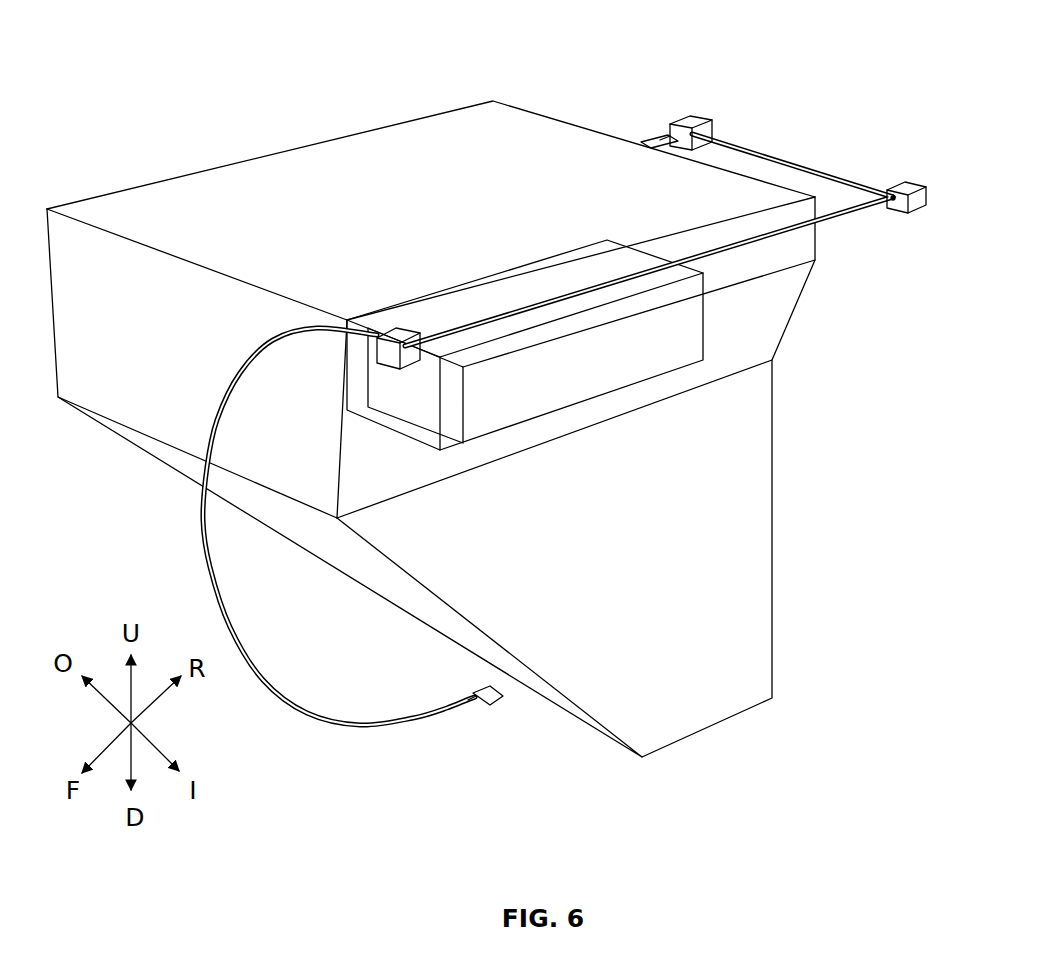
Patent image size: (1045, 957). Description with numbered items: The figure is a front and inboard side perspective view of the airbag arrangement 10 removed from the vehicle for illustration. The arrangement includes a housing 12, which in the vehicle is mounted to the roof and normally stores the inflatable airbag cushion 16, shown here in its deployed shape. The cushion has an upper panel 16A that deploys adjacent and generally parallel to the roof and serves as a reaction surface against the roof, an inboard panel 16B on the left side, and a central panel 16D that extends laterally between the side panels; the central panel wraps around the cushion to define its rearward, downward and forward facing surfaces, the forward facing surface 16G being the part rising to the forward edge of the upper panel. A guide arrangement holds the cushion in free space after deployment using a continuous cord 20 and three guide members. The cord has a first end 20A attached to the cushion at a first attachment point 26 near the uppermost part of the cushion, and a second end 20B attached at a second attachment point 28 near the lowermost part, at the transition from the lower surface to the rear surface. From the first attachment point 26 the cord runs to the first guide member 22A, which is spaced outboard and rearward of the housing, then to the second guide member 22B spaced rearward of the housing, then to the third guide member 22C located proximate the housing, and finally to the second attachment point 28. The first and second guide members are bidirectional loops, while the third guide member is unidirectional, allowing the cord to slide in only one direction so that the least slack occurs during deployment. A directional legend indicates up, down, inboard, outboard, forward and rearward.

The airbag arrangement 10 is at (100, 42).
The housing 12 is at (653, 348).
The airbag cushion 16 is at (463, 100).
The upper panel 16A is at (123, 207).
The inboard panel 16B is at (693, 680).
The central panel 16D is at (124, 397).
The forward facing surface 16G is at (385, 597).
The continuous cord 20 is at (855, 213).
The first end 20A is at (658, 140).
The second end 20B is at (474, 702).
The first guide member 22A is at (693, 120).
The second guide member 22B is at (907, 180).
The third guide member 22C is at (400, 335).
The first attachment point 26 is at (650, 150).
The second attachment point 28 is at (495, 690).